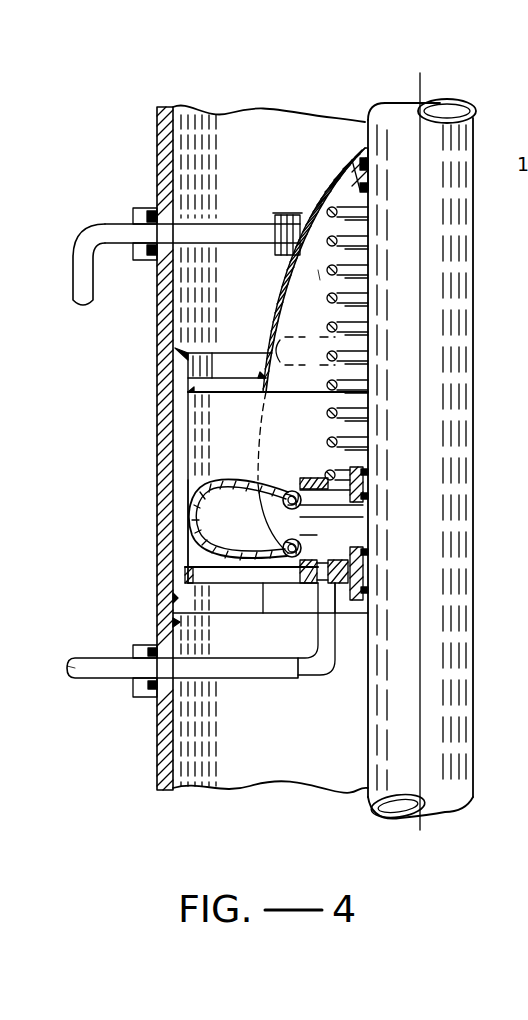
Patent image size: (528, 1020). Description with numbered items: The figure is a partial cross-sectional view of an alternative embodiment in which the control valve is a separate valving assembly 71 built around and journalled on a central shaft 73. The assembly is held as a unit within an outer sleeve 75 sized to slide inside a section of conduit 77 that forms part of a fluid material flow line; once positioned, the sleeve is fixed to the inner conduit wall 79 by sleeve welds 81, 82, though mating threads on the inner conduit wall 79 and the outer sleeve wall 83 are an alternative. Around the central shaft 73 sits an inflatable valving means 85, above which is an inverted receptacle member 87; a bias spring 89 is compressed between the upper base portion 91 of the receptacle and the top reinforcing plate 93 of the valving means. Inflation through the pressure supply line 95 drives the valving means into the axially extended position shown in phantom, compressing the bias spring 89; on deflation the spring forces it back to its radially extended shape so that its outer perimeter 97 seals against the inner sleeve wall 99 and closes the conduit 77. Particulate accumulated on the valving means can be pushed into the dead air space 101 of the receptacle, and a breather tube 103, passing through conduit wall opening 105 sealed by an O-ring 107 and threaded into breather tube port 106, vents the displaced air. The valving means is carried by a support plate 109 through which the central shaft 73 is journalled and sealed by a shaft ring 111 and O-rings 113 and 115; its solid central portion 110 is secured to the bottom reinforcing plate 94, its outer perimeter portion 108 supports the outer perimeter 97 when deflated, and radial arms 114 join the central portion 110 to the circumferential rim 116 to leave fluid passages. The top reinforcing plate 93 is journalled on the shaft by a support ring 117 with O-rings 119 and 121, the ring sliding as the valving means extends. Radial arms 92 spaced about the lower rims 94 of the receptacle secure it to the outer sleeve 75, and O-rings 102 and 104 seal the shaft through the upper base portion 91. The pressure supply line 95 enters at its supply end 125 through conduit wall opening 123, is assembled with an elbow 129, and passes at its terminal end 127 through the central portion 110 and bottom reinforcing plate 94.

The valving assembly 71 is at (318, 314).
The central shaft 73 is at (447, 253).
The outer sleeve 75 is at (182, 490).
The conduit 77 is at (160, 343).
The inner conduit wall 79 is at (177, 595).
The sleeve weld 81 is at (180, 622).
The sleeve weld 82 is at (176, 348).
The outer sleeve wall 83 is at (195, 455).
The inflatable valving means 85 is at (268, 480).
The inverted receptacle member 87 is at (350, 165).
The bias spring 89 is at (327, 383).
The upper base portion 91 is at (355, 183).
The radial arms 92 is at (208, 385).
The top reinforcing plate 93 is at (305, 486).
The bottom reinforcing plate 94 is at (267, 367).
The pressure supply line 95 is at (262, 673).
The outer perimeter 97 is at (205, 483).
The inner sleeve wall 99 is at (197, 468).
The dead air space 101 is at (317, 275).
The O-ring 102 is at (362, 123).
The breather tube 103 is at (255, 233).
The O-ring 104 is at (368, 188).
The conduit wall opening 105 is at (177, 223).
The breather tube port 106 is at (280, 213).
The O-ring 107 is at (137, 208).
The outer perimeter portion 108 is at (211, 588).
The support plate 109 is at (271, 589).
The central portion 110 is at (288, 612).
The shaft ring 111 is at (362, 573).
The O-ring 113 is at (365, 555).
The radial arms 114 is at (263, 605).
The O-ring 115 is at (367, 590).
The circumferential rim 116 is at (187, 577).
The support ring 117 is at (350, 495).
The O-ring 119 is at (365, 497).
The O-ring 121 is at (360, 470).
The conduit wall opening 123 is at (185, 692).
The supply end 125 is at (118, 672).
The terminal end 127 is at (327, 563).
The elbow 129 is at (320, 670).